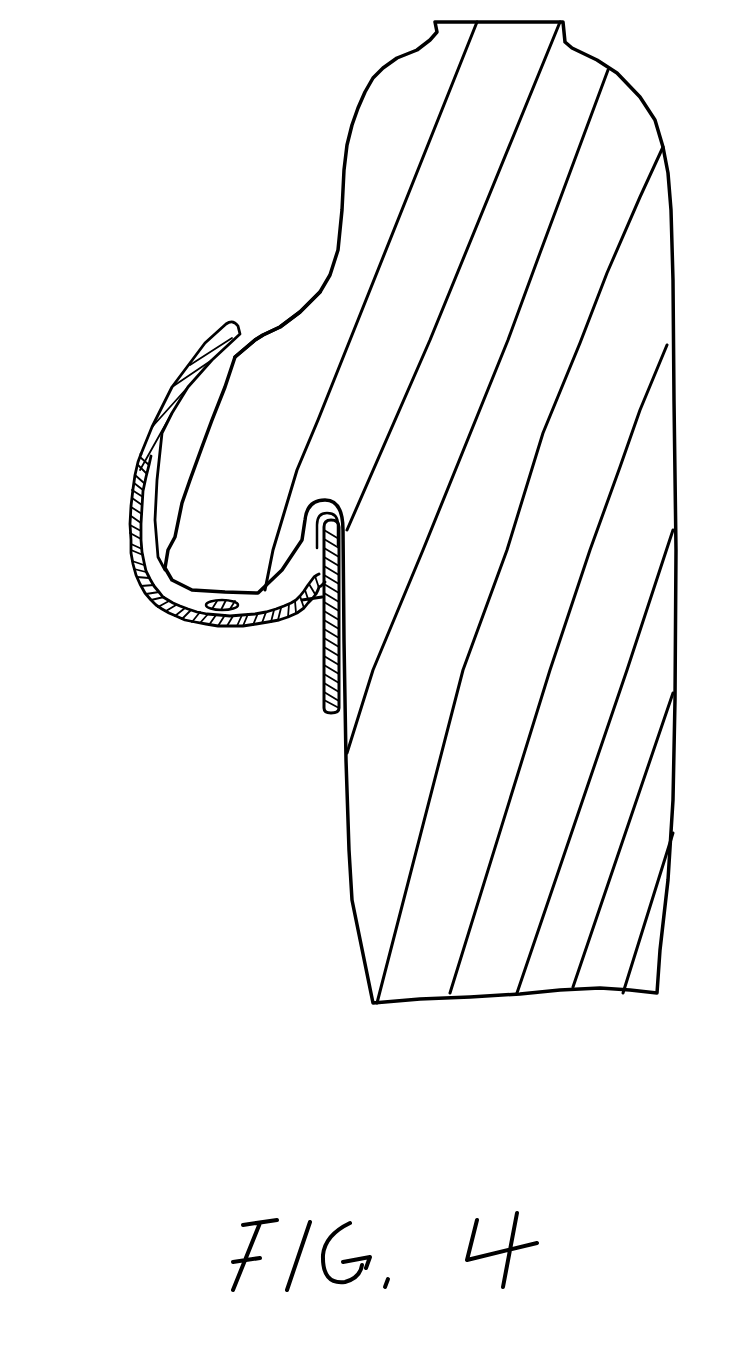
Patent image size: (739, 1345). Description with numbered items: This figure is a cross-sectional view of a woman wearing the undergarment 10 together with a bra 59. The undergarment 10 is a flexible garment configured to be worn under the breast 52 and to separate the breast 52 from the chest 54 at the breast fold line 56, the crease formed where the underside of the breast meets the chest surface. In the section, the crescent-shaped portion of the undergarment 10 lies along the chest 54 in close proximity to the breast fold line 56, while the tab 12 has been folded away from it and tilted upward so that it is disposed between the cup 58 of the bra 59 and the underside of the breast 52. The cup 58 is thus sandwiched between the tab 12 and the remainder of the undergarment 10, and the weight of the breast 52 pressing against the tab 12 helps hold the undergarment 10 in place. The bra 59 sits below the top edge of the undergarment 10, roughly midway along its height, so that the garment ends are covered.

The chest 54 is at (347, 763).
The breast fold line 56 is at (328, 498).
The undergarment 10 is at (322, 682).
The tab 12 is at (228, 587).
The cup 58 is at (188, 368).
The bra 59 is at (150, 586).
The breast 52 is at (263, 335).